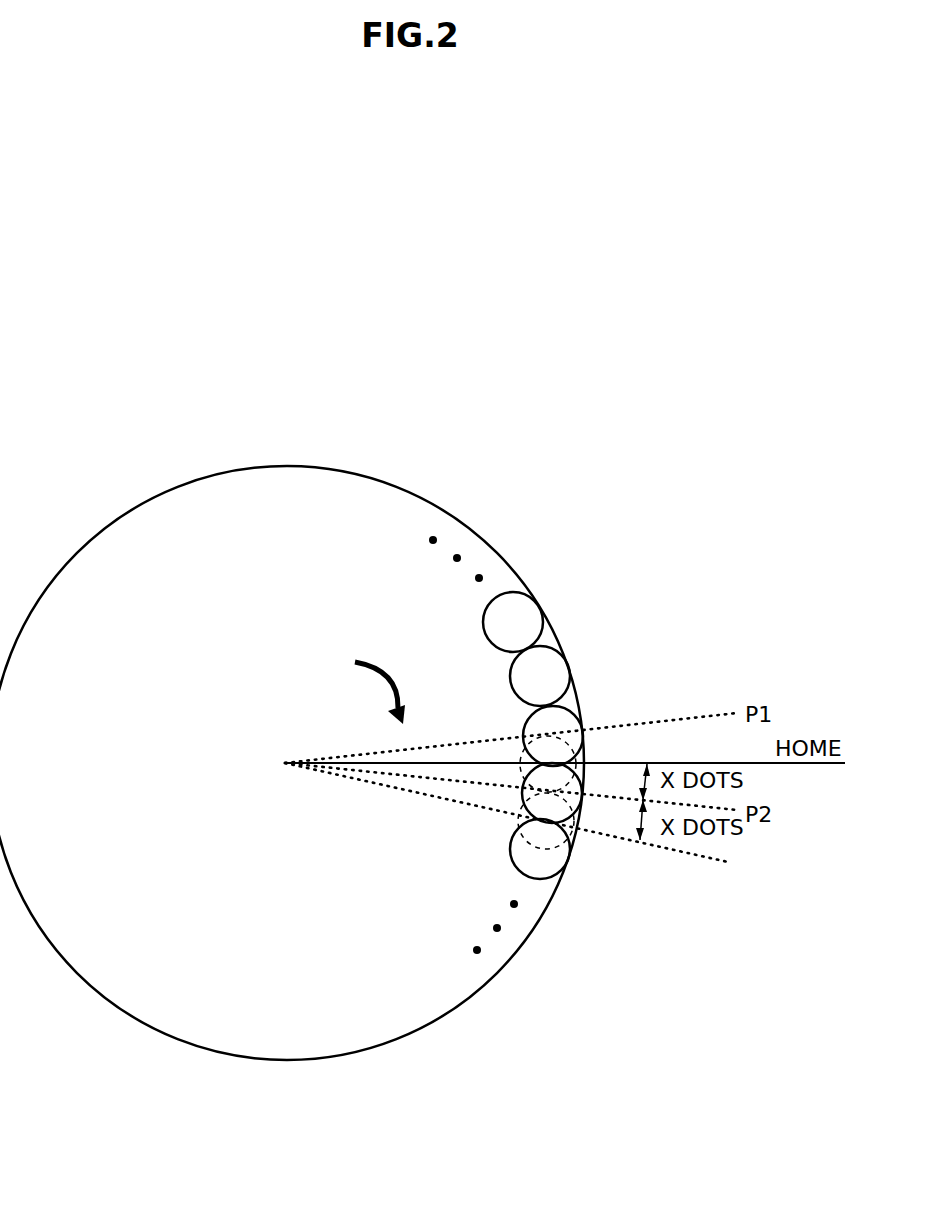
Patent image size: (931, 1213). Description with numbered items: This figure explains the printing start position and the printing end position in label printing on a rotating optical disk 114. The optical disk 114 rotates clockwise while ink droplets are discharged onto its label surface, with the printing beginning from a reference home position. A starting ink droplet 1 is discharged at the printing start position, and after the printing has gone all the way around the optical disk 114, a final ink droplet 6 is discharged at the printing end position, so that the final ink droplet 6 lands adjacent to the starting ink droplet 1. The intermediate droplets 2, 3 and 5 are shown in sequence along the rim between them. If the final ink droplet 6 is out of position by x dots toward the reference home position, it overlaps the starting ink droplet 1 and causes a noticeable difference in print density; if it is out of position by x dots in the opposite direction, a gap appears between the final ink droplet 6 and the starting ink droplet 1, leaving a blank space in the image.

The optical disk 114 is at (410, 491).
The starting ink droplet 1 is at (553, 736).
The position 2 is at (540, 676).
The position 3 is at (513, 622).
The position 5 is at (540, 849).
The final ink droplet 6 is at (552, 793).